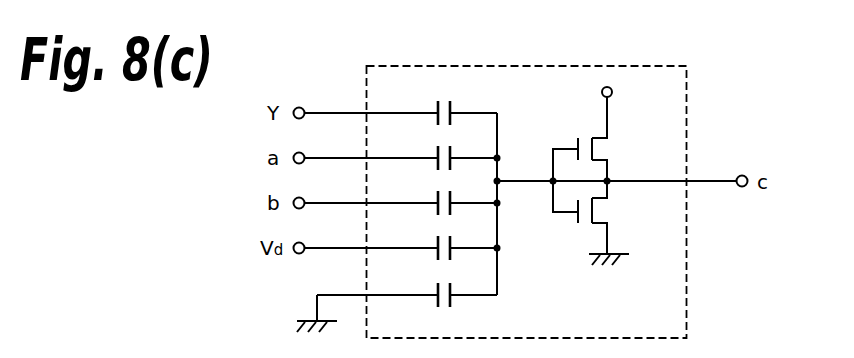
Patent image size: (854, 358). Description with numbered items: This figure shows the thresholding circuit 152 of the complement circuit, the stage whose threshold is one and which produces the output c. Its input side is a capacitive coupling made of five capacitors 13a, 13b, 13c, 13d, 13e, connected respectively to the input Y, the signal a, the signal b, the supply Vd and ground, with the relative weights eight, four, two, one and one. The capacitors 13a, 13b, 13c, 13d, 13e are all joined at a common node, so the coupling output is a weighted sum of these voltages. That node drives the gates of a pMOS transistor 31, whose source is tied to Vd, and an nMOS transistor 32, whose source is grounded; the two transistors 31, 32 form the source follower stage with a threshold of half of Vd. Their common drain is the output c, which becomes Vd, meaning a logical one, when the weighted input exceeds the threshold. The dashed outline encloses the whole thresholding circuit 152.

The thresholding circuit 152 is at (688, 86).
The capacitor 13a is at (438, 104).
The capacitor 13b is at (438, 149).
The capacitor 13c is at (438, 194).
The capacitor 13d is at (438, 239).
The capacitor 13e is at (438, 286).
The pMOS transistor 31 is at (607, 131).
The nMOS transistor 32 is at (608, 223).